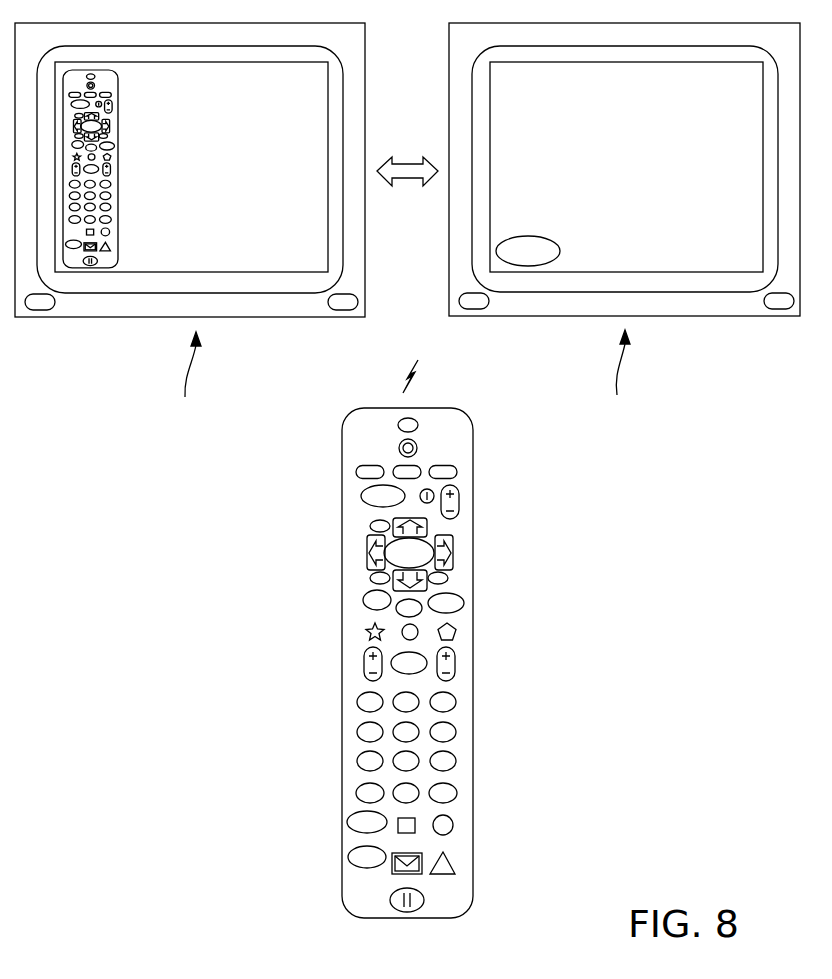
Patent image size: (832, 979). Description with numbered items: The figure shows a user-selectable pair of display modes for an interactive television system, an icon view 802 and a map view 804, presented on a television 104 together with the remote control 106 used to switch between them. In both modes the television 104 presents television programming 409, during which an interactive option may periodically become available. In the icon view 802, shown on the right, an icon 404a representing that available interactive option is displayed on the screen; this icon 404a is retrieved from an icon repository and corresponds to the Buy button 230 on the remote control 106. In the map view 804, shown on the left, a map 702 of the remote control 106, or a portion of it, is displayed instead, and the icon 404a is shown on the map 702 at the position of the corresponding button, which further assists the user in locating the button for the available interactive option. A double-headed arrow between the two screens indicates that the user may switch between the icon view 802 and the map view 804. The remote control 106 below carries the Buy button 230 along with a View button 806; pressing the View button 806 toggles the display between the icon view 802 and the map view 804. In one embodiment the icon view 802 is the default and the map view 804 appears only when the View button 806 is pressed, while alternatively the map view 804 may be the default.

The television 104 is at (145, 317).
The television programming 409 is at (409, 105).
The icon 404a is at (115, 146).
The map 702 is at (118, 160).
The remote control 106 is at (342, 662).
The Buy button 230 is at (464, 603).
The View button 806 is at (347, 822).
The map view 804 is at (185, 401).
The icon view 802 is at (618, 399).